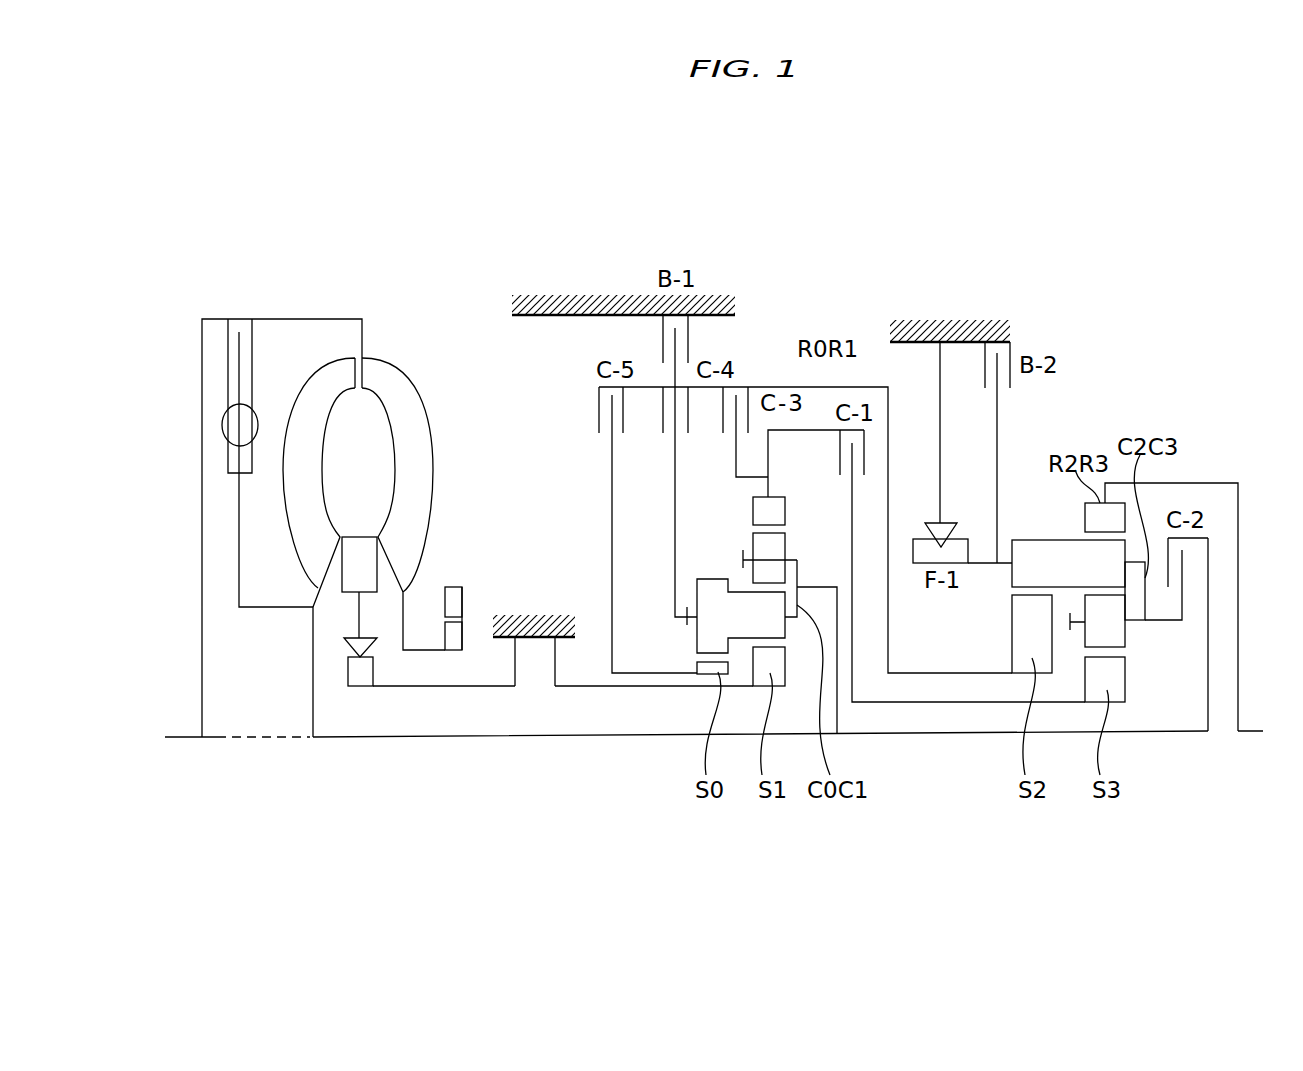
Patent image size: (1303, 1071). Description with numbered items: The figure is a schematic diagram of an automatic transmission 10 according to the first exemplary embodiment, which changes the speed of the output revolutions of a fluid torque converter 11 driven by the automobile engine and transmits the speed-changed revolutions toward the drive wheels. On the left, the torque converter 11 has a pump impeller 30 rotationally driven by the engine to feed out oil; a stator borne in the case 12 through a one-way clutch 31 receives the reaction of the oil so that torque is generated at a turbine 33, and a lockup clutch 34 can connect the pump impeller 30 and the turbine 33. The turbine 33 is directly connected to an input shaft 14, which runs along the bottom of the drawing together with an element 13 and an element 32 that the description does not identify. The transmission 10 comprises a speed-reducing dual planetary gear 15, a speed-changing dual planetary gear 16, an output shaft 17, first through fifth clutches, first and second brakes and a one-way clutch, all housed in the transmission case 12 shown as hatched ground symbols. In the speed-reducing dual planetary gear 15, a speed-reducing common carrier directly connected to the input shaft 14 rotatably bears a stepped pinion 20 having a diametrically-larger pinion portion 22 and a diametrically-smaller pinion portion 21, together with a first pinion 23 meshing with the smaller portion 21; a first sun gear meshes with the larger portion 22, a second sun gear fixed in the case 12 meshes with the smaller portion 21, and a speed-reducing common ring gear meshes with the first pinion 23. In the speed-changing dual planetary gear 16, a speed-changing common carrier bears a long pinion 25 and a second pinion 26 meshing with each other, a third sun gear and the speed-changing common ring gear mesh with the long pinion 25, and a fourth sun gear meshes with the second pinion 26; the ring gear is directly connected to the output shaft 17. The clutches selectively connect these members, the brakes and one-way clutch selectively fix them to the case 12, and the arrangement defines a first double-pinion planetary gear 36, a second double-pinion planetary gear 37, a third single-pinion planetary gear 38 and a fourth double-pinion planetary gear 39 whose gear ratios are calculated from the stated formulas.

The automatic transmission 10 is at (232, 255).
The fluid torque converter 11 is at (322, 278).
The transmission case 12 is at (578, 295).
The axis of rotation 13 is at (258, 742).
The input shaft 14 is at (450, 740).
The speed-reducing dual planetary gear 15 is at (768, 338).
The speed-changing dual planetary gear 16 is at (1100, 388).
The output shaft 17 is at (1263, 731).
The stepped pinion 20 is at (715, 579).
The diametrically-smaller pinion portion 21 is at (738, 628).
The diametrically-larger pinion portion 22 is at (705, 636).
The first pinion 23 is at (787, 547).
The long pinion 25 is at (1042, 540).
The second pinion 26 is at (1125, 632).
The pump impeller 30 is at (400, 370).
The one-way clutch 31 is at (361, 678).
The turbine runner 32 is at (370, 563).
The turbine 33 is at (318, 378).
The lockup clutch 34 is at (223, 418).
The first double-pinion planetary gear 36 is at (683, 745).
The second double-pinion planetary gear 37 is at (790, 745).
The third single-pinion planetary gear 38 is at (1000, 742).
The fourth double-pinion planetary gear 39 is at (1130, 742).